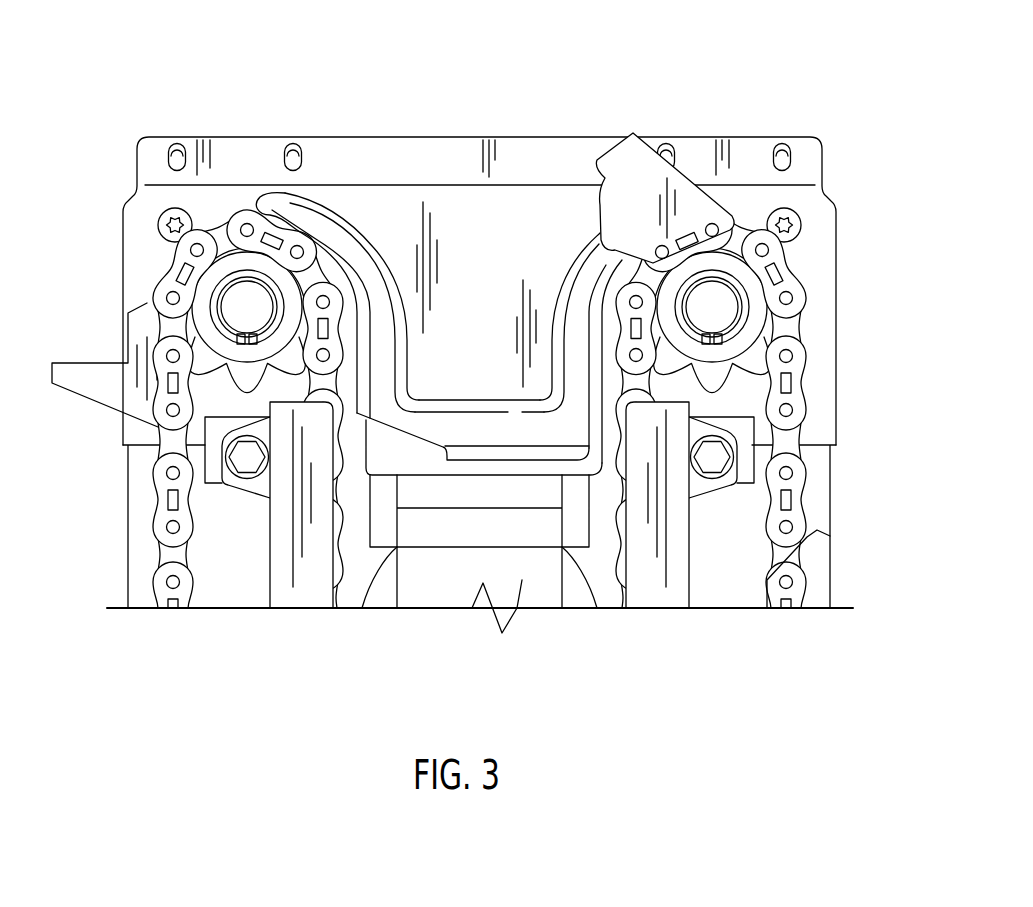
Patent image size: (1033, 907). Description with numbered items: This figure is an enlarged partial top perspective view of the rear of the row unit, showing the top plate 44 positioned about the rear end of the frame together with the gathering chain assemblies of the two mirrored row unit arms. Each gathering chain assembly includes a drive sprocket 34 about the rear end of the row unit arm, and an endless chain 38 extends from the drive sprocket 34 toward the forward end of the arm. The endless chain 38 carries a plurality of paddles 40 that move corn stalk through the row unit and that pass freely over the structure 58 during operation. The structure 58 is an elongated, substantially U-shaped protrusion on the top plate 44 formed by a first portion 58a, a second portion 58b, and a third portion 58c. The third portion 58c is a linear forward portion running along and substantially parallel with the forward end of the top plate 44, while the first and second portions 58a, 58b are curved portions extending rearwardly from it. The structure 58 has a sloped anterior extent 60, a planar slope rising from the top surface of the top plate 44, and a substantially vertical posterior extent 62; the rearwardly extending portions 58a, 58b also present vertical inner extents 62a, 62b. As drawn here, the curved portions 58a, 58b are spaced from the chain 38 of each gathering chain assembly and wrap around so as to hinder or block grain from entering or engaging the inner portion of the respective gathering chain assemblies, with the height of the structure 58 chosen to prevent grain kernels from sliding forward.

The drive sprocket 34 is at (713, 303).
The endless chain 38 is at (145, 184).
The paddles 40 is at (80, 363).
The top plate 44 is at (461, 344).
The structure 58 is at (568, 437).
The first portion 58a is at (601, 167).
The second portion 58b is at (353, 212).
The third portion 58c is at (473, 435).
The sloped anterior extent 60 is at (455, 460).
The vertical posterior extent 62 is at (497, 413).
The vertical inner extent 62a is at (568, 244).
The vertical inner extent 62b is at (384, 247).